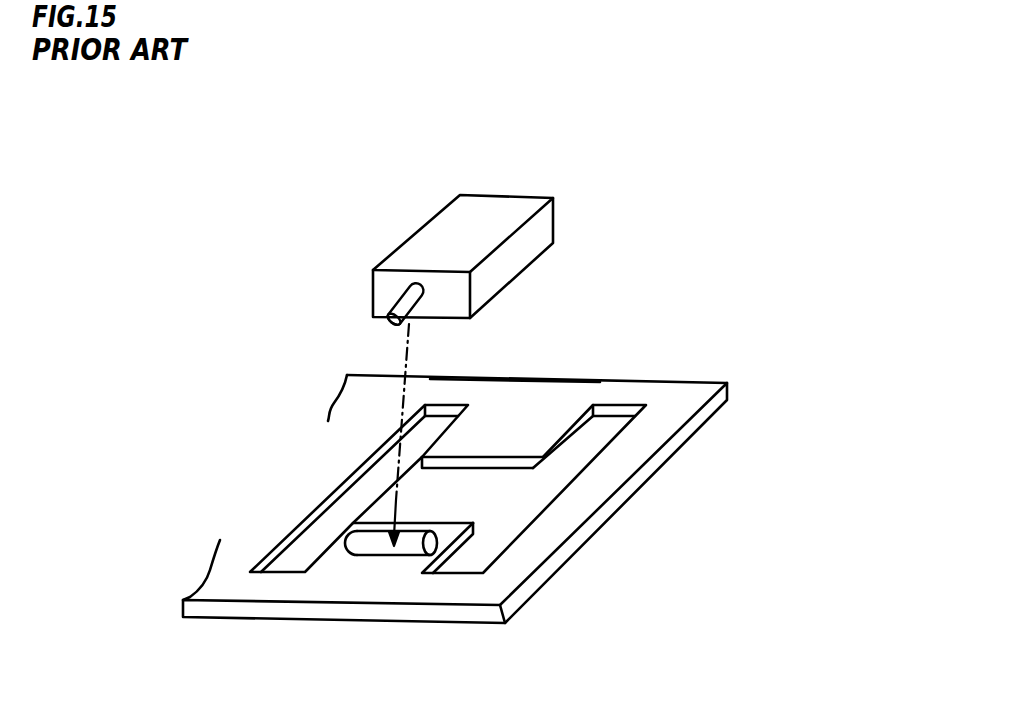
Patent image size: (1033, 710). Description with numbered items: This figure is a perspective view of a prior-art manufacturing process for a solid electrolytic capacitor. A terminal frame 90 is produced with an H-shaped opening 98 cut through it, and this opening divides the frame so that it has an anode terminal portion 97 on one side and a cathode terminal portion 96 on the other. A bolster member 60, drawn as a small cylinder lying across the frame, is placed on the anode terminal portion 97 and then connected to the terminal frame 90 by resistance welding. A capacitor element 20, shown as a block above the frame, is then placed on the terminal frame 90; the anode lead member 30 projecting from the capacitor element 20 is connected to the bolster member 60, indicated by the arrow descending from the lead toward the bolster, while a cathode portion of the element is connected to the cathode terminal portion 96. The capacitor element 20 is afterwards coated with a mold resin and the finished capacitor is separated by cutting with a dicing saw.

The capacitor element 20 is at (458, 229).
The anode lead member 30 is at (407, 304).
The bolster member 60 is at (378, 541).
The terminal frame 90 is at (614, 474).
The cathode terminal portion 96 is at (515, 418).
The anode terminal portion 97 is at (474, 514).
The H-shaped opening 98 is at (545, 508).